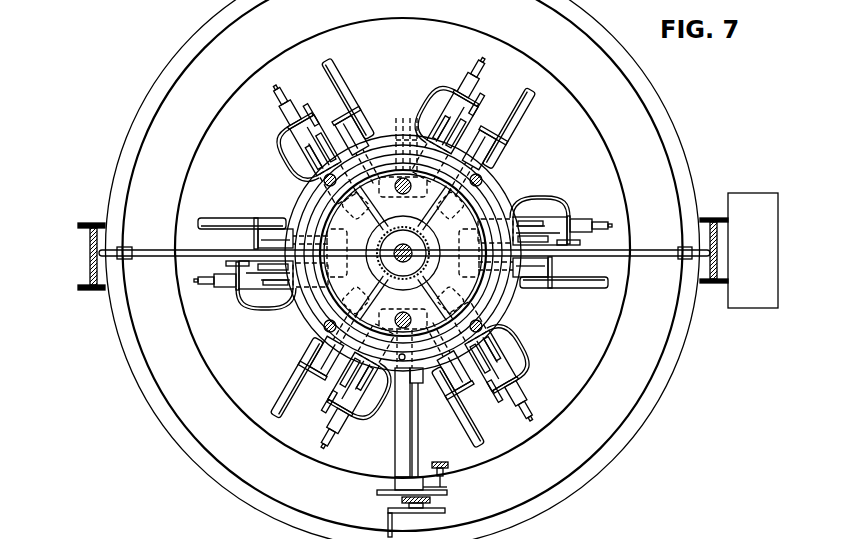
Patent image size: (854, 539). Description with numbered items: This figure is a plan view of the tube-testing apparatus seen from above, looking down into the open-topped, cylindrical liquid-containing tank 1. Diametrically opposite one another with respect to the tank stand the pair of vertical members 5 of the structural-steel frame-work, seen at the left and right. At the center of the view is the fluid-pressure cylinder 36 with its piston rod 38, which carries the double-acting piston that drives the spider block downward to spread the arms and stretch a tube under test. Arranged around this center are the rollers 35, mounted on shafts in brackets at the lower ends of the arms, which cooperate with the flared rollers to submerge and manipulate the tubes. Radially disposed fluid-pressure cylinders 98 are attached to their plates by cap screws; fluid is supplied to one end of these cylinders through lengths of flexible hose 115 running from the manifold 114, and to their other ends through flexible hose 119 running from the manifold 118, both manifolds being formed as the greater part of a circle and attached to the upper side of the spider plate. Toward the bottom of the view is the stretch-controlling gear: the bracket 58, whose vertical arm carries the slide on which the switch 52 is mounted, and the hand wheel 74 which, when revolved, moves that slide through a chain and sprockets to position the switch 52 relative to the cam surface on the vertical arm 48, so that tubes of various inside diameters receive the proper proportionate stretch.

The liquid-containing vessel or tank 1 is at (137, 378).
The vertical members 5 is at (82, 286).
The rollers 35 is at (216, 225).
The fluid-pressure cylinder 36 is at (382, 240).
The piston rod 38 is at (389, 268).
The vertical arm 48 is at (450, 465).
The switch 52 is at (443, 482).
The bracket 58 is at (403, 452).
The hand wheel 74 is at (387, 511).
The fluid-pressure cylinders 98 is at (307, 128).
The manifold 114 is at (317, 213).
The flexible hose 115 is at (260, 300).
The manifold 118 is at (480, 184).
The flexible hose 119 is at (510, 330).